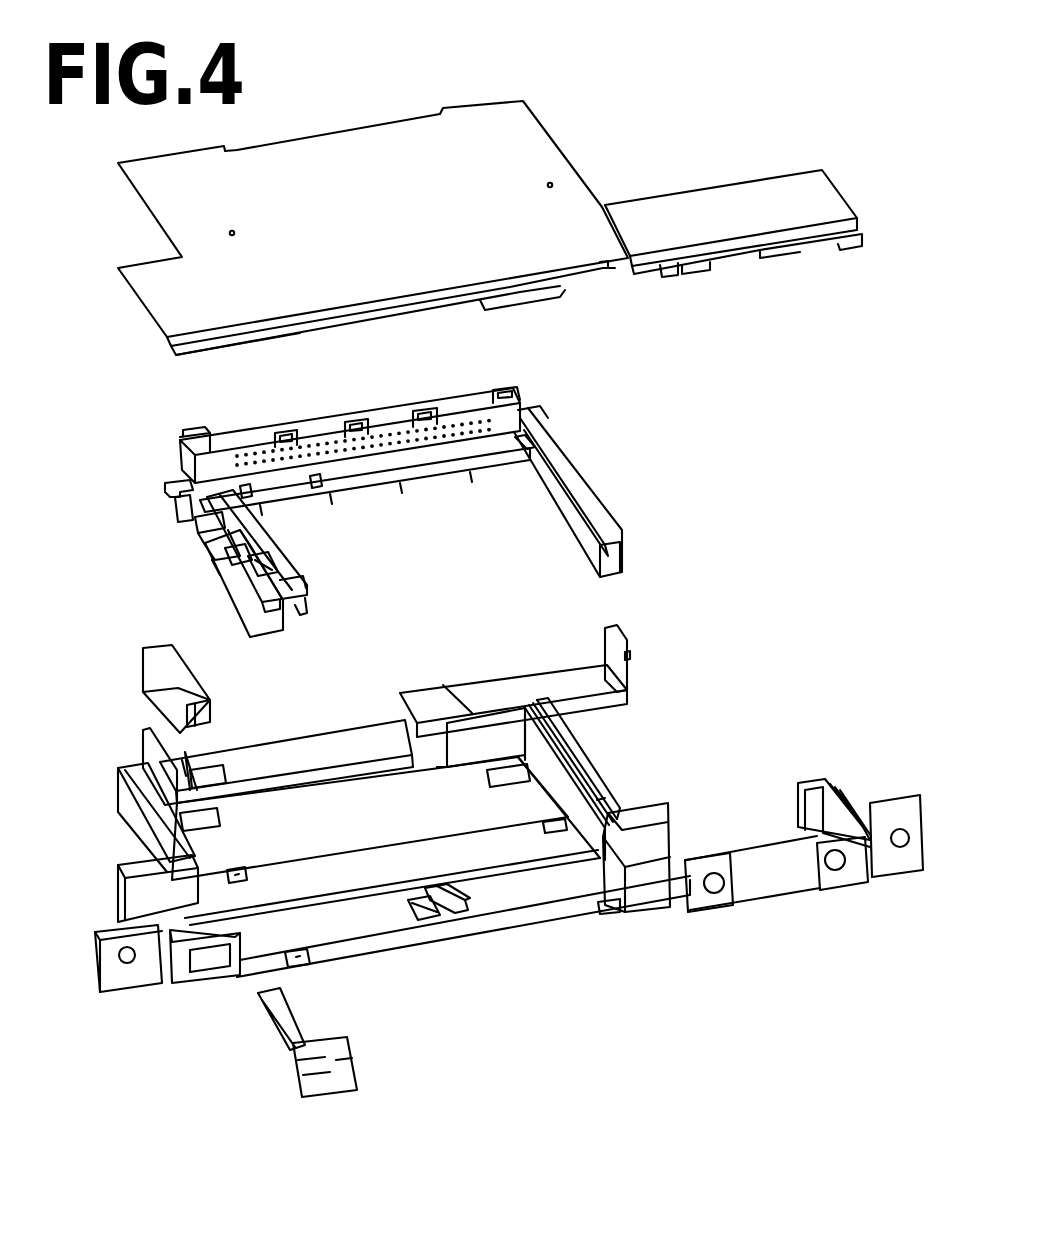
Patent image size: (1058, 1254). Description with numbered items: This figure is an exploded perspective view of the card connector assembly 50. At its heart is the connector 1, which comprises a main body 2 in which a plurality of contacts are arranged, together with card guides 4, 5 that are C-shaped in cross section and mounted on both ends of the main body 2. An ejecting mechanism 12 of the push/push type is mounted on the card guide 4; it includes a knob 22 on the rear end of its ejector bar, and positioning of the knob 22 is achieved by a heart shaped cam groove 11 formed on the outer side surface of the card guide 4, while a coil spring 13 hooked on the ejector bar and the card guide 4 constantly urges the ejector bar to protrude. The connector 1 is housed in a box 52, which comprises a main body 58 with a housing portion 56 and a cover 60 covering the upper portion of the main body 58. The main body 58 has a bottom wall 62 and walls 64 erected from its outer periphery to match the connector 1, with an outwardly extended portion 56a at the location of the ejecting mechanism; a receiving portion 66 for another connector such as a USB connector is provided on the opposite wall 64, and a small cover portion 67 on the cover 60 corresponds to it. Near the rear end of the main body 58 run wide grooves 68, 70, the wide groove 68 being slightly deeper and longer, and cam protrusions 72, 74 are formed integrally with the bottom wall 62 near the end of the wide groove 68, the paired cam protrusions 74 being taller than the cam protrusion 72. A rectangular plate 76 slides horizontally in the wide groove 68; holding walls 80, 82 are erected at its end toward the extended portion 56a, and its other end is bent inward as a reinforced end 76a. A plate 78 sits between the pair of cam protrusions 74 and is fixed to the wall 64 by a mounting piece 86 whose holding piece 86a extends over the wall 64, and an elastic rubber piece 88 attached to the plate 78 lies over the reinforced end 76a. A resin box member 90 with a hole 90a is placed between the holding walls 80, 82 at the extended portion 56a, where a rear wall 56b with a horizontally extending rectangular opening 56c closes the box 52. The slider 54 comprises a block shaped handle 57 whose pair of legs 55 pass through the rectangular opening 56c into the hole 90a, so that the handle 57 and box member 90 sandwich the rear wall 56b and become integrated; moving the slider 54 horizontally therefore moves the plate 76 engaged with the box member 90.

The assembly 50 is at (686, 92).
The cover 60 is at (372, 160).
The small cover portion 67 is at (752, 200).
The connector 1 is at (638, 465).
The main body 2 is at (326, 430).
The card guide 4 is at (287, 572).
The card guide 5 is at (603, 513).
The ejecting mechanism 12 is at (182, 560).
The coil spring 13 is at (245, 560).
The heart shaped cam groove 11 is at (268, 560).
The knob 22 is at (257, 620).
The housing portion 56 is at (486, 832).
The extended portion 56a is at (170, 884).
The rear wall 56b is at (190, 978).
The rectangular opening 56c is at (213, 960).
The box 52 is at (567, 747).
The main body 58 is at (597, 800).
The bottom wall 62 is at (312, 831).
The walls 64 is at (143, 827).
The receiving portion 66 is at (770, 820).
The wide groove 68 is at (360, 935).
The wide groove 70 is at (545, 895).
The cam protrusion 72 is at (415, 925).
The cam protrusions 74 is at (440, 890).
The plate 76 is at (292, 767).
The reinforced end 76a is at (437, 767).
The plate 78 is at (557, 683).
The holding wall 80 is at (150, 755).
The holding wall 82 is at (190, 762).
The mounting piece 86 is at (625, 672).
The holding piece 86a is at (627, 648).
The elastic rubber piece 88 is at (450, 698).
The box member 90 is at (180, 675).
The hole 90a is at (207, 712).
The slider 54 is at (344, 1068).
The legs 55 is at (287, 1017).
The handle 57 is at (345, 1047).